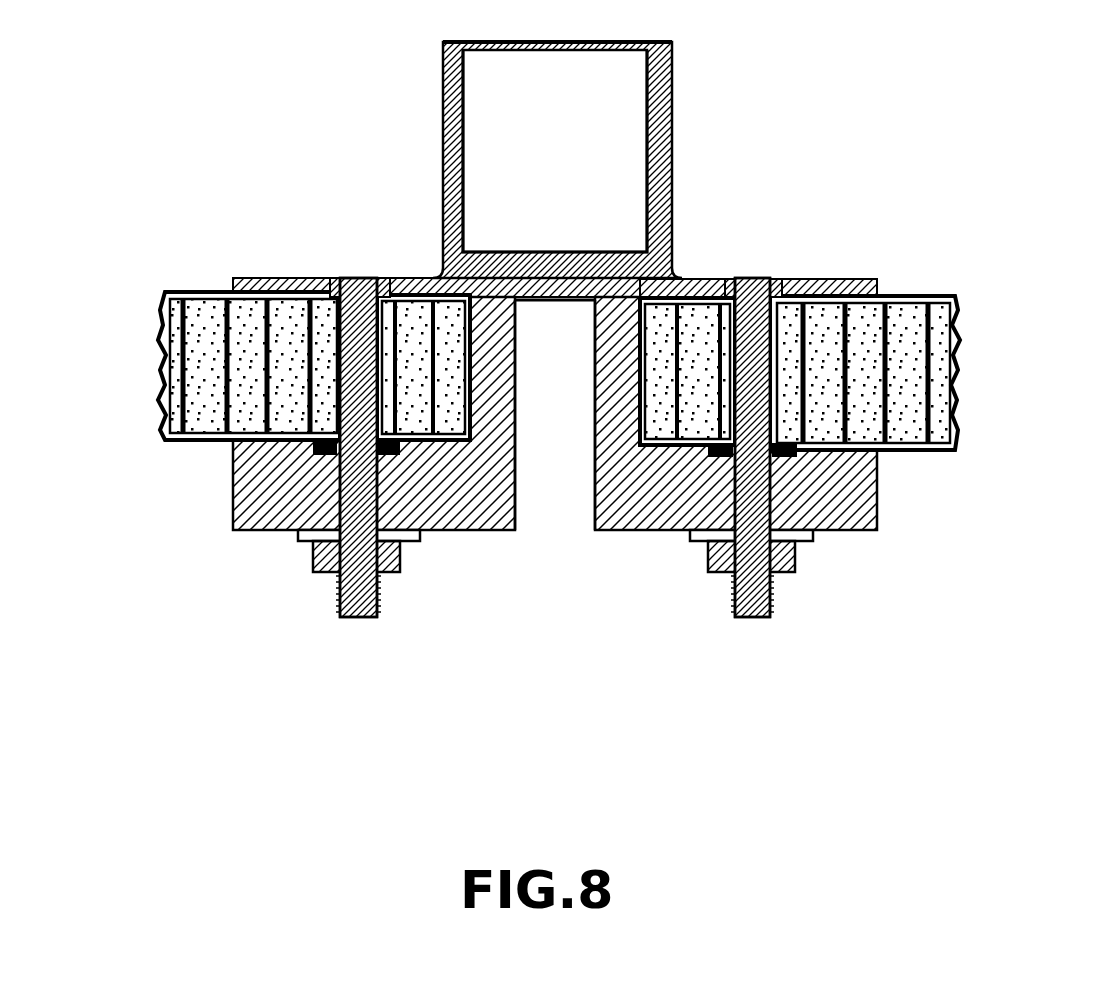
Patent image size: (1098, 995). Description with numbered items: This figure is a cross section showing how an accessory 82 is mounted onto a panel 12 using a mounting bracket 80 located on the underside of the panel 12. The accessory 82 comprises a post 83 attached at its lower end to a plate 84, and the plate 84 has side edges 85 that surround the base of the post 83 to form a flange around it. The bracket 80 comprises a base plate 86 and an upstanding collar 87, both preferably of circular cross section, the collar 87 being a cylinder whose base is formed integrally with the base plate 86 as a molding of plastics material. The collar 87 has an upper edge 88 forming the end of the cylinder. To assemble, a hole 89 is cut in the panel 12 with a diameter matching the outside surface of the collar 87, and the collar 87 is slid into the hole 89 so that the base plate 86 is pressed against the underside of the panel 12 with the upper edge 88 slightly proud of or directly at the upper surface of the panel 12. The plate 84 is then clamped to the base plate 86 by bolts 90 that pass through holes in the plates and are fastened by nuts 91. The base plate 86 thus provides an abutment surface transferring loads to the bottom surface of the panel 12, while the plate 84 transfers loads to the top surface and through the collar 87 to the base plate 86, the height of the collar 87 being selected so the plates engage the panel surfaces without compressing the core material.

The panel 12 is at (976, 354).
The mounting bracket 80 is at (622, 356).
The accessory 82 is at (577, 169).
The post 83 is at (672, 133).
The plate 84 is at (405, 278).
The side edges 85 is at (830, 280).
The base plate 86 is at (652, 523).
The collar 87 is at (517, 362).
The upper edge 88 is at (497, 298).
The hole 89 is at (676, 280).
The bolts 90 is at (340, 278).
The nuts 91 is at (313, 568).